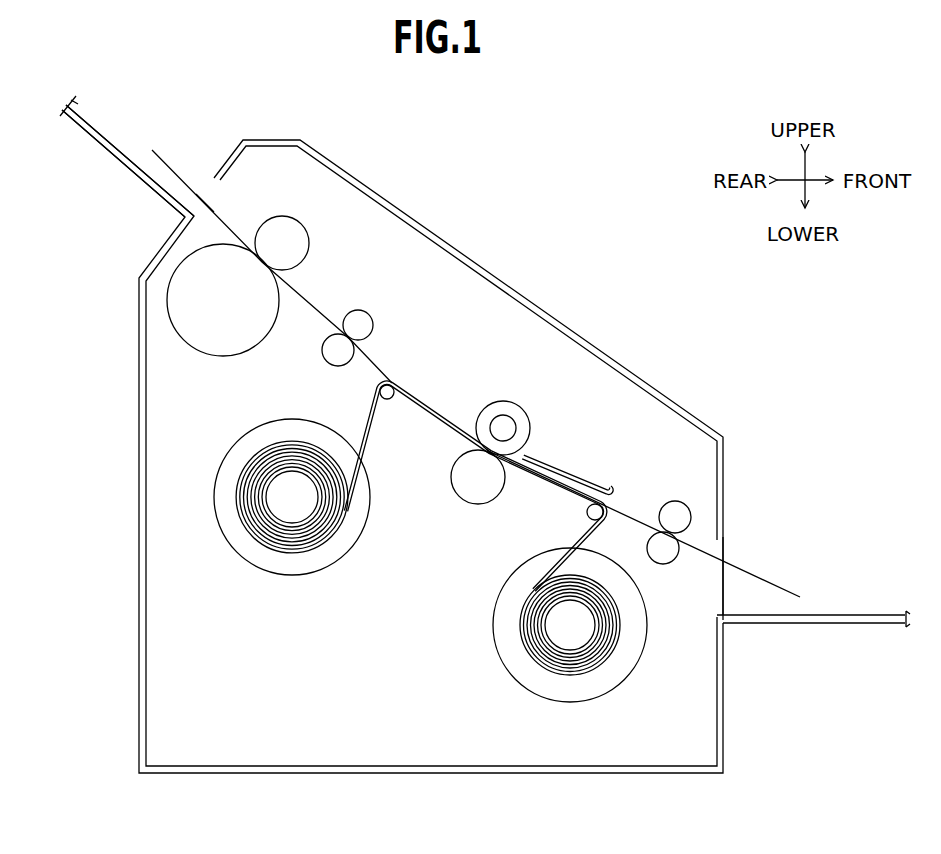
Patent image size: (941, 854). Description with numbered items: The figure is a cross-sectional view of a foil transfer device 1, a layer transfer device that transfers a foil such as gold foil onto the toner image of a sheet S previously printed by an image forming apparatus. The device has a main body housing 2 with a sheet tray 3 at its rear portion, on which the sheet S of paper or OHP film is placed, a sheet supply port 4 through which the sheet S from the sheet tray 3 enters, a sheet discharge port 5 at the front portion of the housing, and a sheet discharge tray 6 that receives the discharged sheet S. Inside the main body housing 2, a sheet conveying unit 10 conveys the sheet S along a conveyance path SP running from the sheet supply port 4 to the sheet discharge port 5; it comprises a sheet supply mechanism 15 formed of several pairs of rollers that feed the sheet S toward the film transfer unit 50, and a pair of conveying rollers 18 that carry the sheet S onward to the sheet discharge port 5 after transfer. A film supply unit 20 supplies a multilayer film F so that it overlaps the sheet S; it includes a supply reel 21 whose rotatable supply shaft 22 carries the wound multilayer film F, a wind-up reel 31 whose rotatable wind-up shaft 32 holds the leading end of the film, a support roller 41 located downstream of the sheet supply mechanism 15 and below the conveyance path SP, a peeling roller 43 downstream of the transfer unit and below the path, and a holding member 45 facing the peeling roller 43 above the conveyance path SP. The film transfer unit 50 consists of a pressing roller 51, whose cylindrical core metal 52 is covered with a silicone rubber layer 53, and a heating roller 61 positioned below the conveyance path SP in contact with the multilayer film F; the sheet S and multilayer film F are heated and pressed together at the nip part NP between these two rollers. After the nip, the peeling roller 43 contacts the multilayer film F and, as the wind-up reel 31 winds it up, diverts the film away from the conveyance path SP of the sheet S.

The foil transfer device 1 is at (599, 206).
The main body housing 2 is at (637, 371).
The sheet tray 3 is at (117, 157).
The sheet supply port 4 is at (207, 192).
The sheet discharge port 5 is at (724, 546).
The sheet discharge tray 6 is at (846, 625).
The sheet conveying unit 10 is at (435, 370).
The sheet supply mechanism 15 is at (332, 274).
The pair of conveying rollers 18 is at (672, 503).
The film supply unit 20 is at (451, 554).
The supply reel 21 is at (275, 562).
The supply shaft 22 is at (304, 514).
The wind-up reel 31 is at (626, 653).
The wind-up shaft 32 is at (591, 643).
The support roller 41 is at (389, 400).
The peeling roller 43 is at (587, 509).
The holding member 45 is at (567, 477).
The film transfer unit 50 is at (502, 409).
The pressing roller 51 is at (521, 402).
The core metal 52 is at (506, 420).
The rubber layer 53 is at (530, 416).
The heating roller 61 is at (462, 455).
The multilayer film F is at (366, 418).
The sheet S is at (476, 344).
The conveyance path SP is at (645, 524).
The nip part NP is at (487, 459).